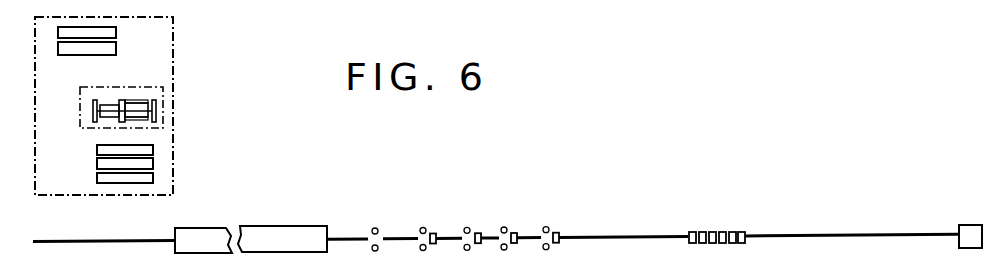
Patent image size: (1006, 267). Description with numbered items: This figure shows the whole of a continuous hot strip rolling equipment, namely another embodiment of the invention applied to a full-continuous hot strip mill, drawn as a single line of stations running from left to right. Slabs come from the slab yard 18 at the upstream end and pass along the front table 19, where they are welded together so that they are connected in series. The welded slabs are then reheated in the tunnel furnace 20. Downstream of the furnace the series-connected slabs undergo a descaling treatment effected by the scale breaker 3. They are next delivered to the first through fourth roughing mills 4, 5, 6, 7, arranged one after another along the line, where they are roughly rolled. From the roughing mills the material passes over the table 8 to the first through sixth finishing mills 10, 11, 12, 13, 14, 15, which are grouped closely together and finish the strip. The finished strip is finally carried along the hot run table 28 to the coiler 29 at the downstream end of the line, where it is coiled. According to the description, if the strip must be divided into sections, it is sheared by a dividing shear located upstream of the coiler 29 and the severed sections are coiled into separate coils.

The slab yard 18 is at (173, 106).
The front table 19 is at (145, 241).
The tunnel furnace 20 is at (279, 225).
The scale breaker 3 is at (372, 227).
The No. 1 roughing mill 4 is at (421, 227).
The No. 2 roughing mill 5 is at (466, 227).
The No. 3 roughing mill 6 is at (504, 227).
The No. 4 roughing mill 7 is at (546, 227).
The table 8 is at (606, 234).
The No. 1 finishing mill 10 is at (691, 231).
The No. 2 finishing mill 11 is at (701, 231).
The No. 3 finishing mill 12 is at (712, 231).
The No. 4 finishing mill 13 is at (722, 231).
The No. 5 finishing mill 14 is at (732, 231).
The No. 6 finishing mill 15 is at (742, 231).
The hot run table 28 is at (864, 233).
The coiler 29 is at (970, 225).